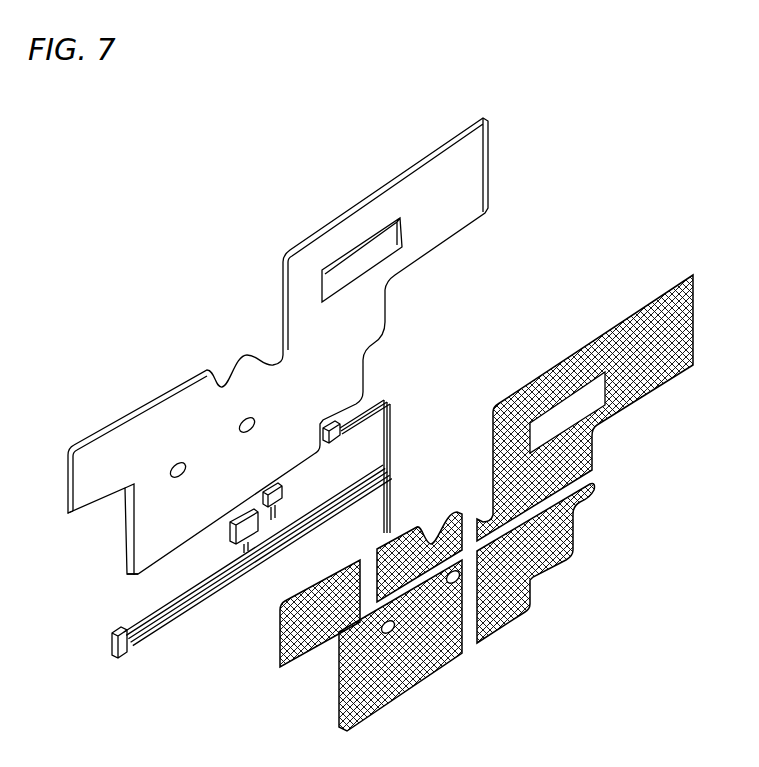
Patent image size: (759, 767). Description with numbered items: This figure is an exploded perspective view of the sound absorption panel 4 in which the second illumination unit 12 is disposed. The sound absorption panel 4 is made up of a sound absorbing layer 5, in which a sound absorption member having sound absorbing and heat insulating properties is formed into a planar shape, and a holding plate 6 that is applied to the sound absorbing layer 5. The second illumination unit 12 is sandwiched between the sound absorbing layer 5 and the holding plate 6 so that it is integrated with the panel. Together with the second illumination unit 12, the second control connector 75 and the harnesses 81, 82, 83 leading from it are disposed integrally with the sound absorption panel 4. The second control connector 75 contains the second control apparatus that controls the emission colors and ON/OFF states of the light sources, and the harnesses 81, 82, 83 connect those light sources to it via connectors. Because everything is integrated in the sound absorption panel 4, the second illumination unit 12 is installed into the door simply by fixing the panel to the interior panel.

The sound absorption panel 4 is at (595, 188).
The sound absorbing layer 5 is at (427, 152).
The holding plate 6 is at (643, 305).
The second illumination unit 12 is at (237, 587).
The second control connector 75 is at (245, 530).
The harness 81 is at (360, 468).
The harness 82 is at (356, 421).
The harness 83 is at (387, 466).